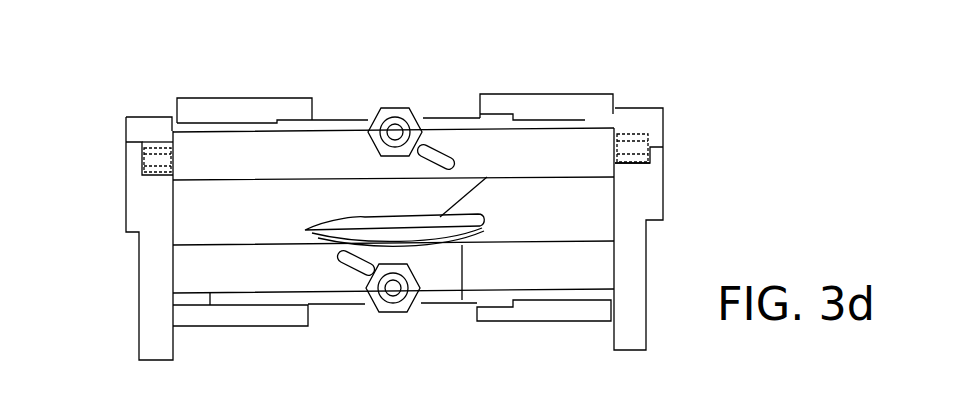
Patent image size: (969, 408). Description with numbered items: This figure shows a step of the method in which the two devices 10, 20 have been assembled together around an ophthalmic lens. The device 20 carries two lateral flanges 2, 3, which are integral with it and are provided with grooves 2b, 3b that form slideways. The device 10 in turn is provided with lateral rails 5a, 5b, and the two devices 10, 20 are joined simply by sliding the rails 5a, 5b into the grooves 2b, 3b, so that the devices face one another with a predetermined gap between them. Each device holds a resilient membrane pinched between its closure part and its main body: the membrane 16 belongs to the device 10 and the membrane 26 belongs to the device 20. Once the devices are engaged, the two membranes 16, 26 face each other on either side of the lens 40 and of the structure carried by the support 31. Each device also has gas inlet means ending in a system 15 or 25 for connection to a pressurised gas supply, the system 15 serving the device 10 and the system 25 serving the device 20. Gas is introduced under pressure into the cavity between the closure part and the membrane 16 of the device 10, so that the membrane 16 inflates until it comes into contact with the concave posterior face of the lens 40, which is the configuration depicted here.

The device 10 is at (347, 110).
The lateral flange 2 is at (125, 200).
The groove 2b is at (125, 142).
The lateral rail 5a is at (160, 142).
The lateral flange 3 is at (664, 187).
The groove 3b is at (665, 147).
The lateral rail 5b is at (630, 135).
The lens 40 is at (310, 230).
The system for connection to a pressurised gas supply 15 is at (397, 107).
The resilient membrane 16 is at (480, 205).
The support 31 is at (300, 237).
The device 20 is at (342, 318).
The system for connection to a pressurised gas supply 25 is at (397, 313).
The resilient membrane 26 is at (462, 300).